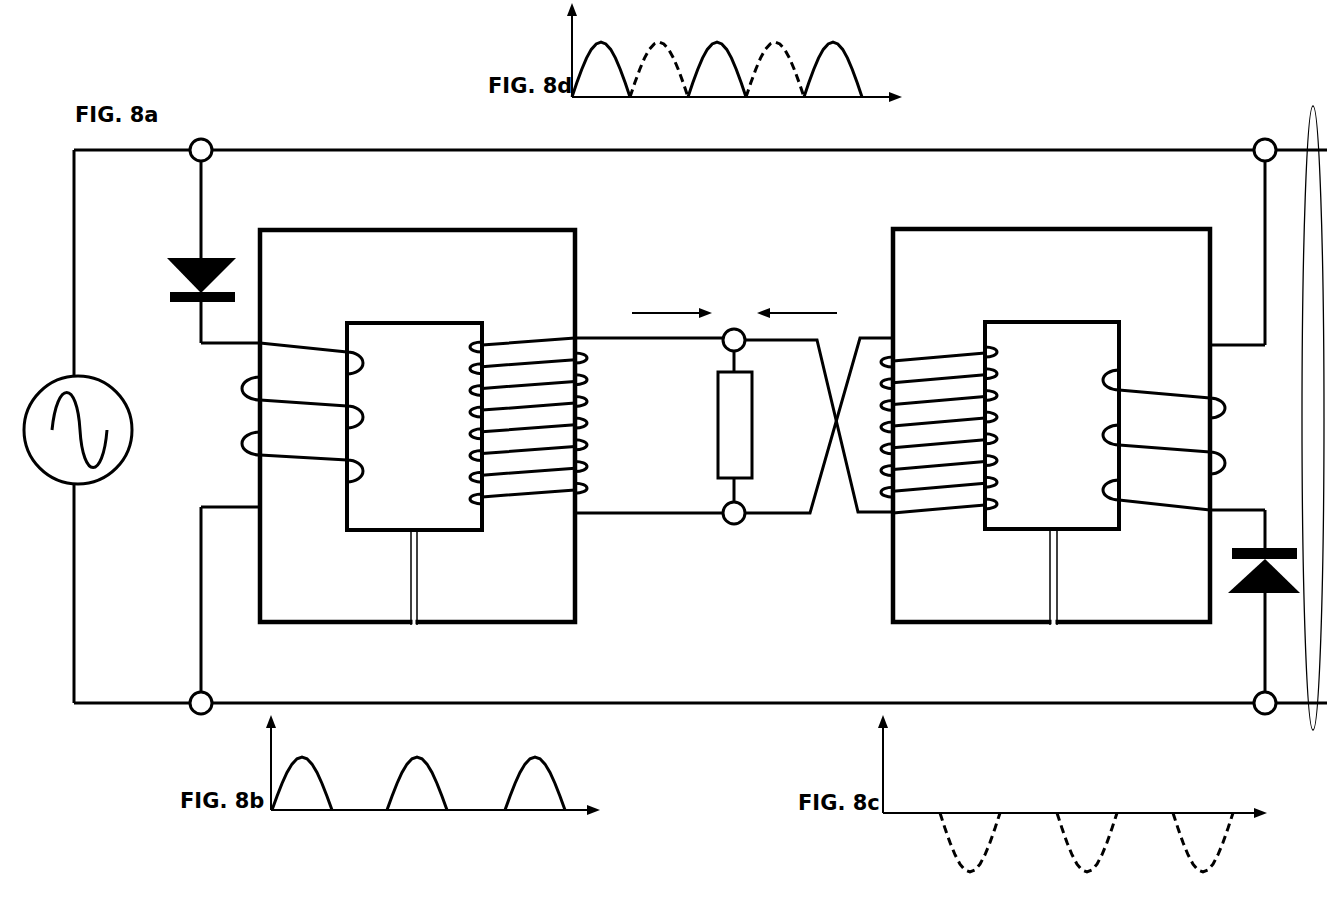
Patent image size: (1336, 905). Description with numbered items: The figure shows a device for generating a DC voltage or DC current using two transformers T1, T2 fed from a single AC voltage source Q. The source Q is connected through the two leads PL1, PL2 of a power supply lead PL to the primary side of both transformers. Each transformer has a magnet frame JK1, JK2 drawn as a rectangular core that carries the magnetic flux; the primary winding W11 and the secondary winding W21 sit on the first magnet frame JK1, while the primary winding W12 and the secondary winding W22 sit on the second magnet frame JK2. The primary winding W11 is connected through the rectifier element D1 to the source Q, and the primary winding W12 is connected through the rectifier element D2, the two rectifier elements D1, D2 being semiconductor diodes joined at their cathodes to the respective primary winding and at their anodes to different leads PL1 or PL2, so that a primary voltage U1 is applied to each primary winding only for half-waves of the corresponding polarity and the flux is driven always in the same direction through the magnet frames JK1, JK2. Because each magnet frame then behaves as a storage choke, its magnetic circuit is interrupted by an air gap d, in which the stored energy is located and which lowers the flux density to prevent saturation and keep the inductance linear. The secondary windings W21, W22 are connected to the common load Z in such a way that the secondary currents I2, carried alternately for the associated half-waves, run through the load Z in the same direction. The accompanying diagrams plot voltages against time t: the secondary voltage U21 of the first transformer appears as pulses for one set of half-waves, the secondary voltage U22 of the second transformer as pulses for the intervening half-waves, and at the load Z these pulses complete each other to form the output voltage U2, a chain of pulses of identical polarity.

In FIG. 8A, the AC voltage source Q is at (85, 430).
In FIG. 8A, the rectifier element D1 is at (191, 252).
In FIG. 8A, the rectifier element D2 is at (1264, 601).
In FIG. 8A, the transformer T1 is at (456, 405).
In FIG. 8A, the transformer T2 is at (1015, 403).
In FIG. 8A, the magnet frame JK1 is at (550, 573).
In FIG. 8A, the magnet frame JK2 is at (927, 568).
In FIG. 8A, the primary winding W11 is at (327, 412).
In FIG. 8A, the secondary winding W21 is at (503, 421).
In FIG. 8A, the secondary winding W22 is at (969, 430).
In FIG. 8A, the primary winding W12 is at (1144, 440).
In FIG. 8A, the primary voltage U1 is at (244, 434).
In FIG. 8A, the load Z is at (738, 552).
In FIG. 8A, the secondary current I2 is at (677, 302).
In FIG. 8A, the lead PL1 is at (708, 152).
In FIG. 8A, the lead PL2 is at (710, 703).
In FIG. 8A, the power supply lead PL is at (1312, 401).
In FIG. 8A, the air gap d is at (415, 628).
In FIG. 8D, the secondary voltage U2 is at (554, 26).
In FIG. 8B, the secondary voltage U21 is at (265, 739).
In FIG. 8C, the secondary voltage U22 is at (877, 739).
In FIG. 8D, the time t is at (922, 98).
In FIG. 8B, the time t is at (619, 815).
In FIG. 8C, the time t is at (1284, 820).